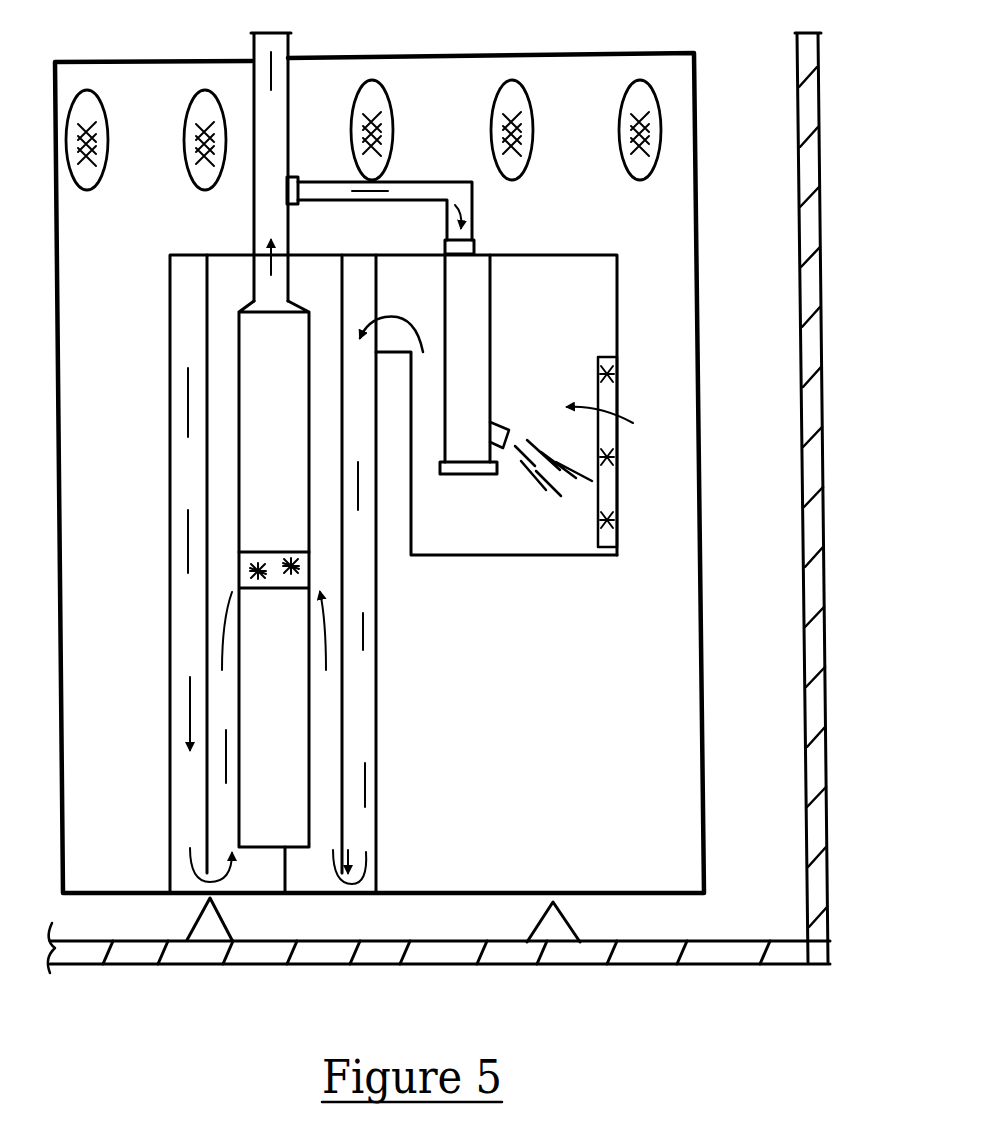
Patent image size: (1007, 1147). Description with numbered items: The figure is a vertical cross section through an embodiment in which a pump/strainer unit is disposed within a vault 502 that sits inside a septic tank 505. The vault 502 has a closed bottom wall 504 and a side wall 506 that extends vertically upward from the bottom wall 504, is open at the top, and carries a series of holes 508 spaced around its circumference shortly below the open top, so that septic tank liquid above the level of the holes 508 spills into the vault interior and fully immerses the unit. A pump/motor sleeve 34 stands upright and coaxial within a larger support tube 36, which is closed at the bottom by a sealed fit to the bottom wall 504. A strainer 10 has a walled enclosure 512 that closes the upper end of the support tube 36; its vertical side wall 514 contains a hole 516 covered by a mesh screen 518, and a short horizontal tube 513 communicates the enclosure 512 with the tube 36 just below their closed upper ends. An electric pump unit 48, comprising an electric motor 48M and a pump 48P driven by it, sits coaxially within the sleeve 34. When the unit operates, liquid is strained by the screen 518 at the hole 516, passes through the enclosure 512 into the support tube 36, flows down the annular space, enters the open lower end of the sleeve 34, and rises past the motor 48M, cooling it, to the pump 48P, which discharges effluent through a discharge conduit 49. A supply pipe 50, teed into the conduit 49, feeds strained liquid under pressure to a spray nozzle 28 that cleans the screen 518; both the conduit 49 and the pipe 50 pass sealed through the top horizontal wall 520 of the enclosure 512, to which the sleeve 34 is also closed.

The vault 502 is at (53, 62).
The holes 508 is at (190, 92).
The discharge conduit 49 is at (289, 60).
The supply pipe 50 is at (413, 180).
The horizontal tube 513 is at (410, 250).
The top horizontal wall 520 is at (562, 250).
The vertical side wall 514 is at (623, 325).
The hole 516 is at (614, 373).
The spray nozzle 28 is at (500, 440).
The mesh screen 518 is at (614, 513).
The strainer 10 is at (640, 557).
The walled enclosure 512 is at (455, 557).
The pump/motor sleeve 34 is at (343, 293).
The support tube 36 is at (383, 716).
The pump 48P is at (290, 433).
The electric motor 48M is at (292, 735).
The electric pump unit 48 is at (285, 895).
The bottom wall 504 is at (490, 900).
The septic tank 505 is at (818, 117).
The side wall 506 is at (695, 237).